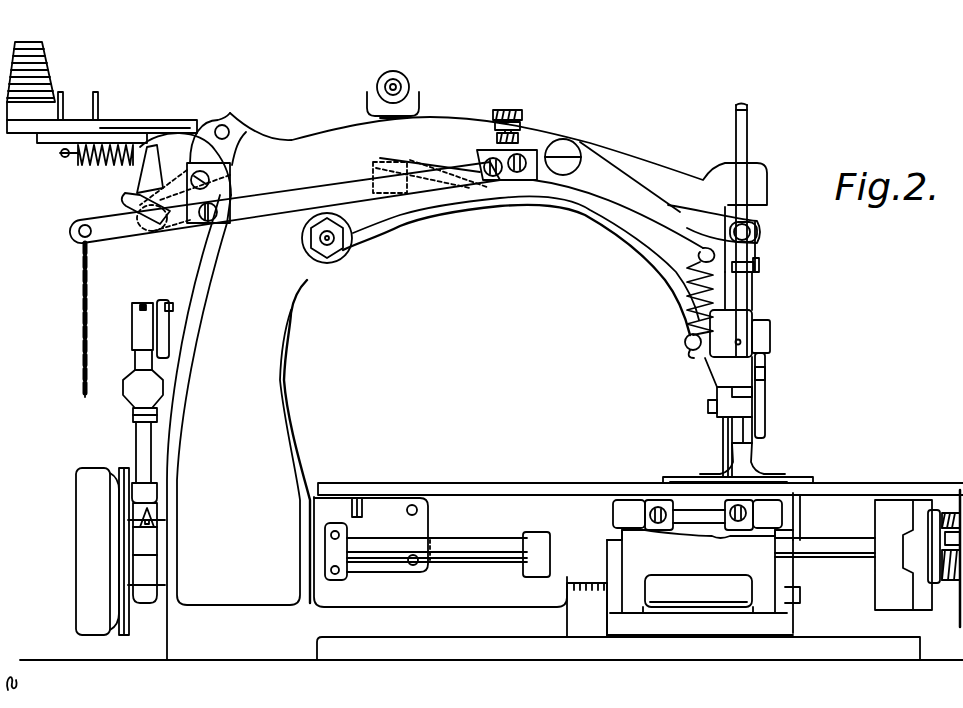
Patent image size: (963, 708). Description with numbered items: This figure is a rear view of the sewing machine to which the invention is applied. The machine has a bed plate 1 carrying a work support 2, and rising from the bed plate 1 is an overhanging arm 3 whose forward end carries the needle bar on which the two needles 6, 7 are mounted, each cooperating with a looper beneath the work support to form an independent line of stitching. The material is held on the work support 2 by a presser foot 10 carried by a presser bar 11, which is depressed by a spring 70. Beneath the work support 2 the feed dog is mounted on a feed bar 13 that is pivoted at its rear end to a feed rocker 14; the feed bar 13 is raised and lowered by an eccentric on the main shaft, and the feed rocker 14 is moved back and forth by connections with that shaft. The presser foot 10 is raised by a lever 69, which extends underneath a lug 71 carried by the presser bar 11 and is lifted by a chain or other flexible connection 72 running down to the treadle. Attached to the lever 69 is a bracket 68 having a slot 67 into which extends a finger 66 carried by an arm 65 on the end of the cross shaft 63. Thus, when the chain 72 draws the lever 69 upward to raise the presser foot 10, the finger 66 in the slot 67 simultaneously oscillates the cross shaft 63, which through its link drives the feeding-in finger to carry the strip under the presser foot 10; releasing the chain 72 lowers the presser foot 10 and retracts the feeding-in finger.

The bed plate 1 is at (405, 643).
The work support 2 is at (490, 488).
The overhanging arm 3 is at (437, 207).
The needle 6 is at (765, 438).
The needle 7 is at (723, 437).
The presser foot 10 is at (757, 465).
The presser bar 11 is at (752, 268).
The feed bar 13 is at (466, 550).
The feed rocker 14 is at (710, 562).
The cross shaft 63 is at (160, 228).
The arm 65 is at (187, 177).
The finger 66 is at (197, 163).
The slot 67 is at (230, 173).
The bracket 68 is at (243, 200).
The lever 69 is at (273, 202).
The spring 70 is at (697, 213).
The lug 71 is at (752, 232).
The chain 72 is at (82, 297).